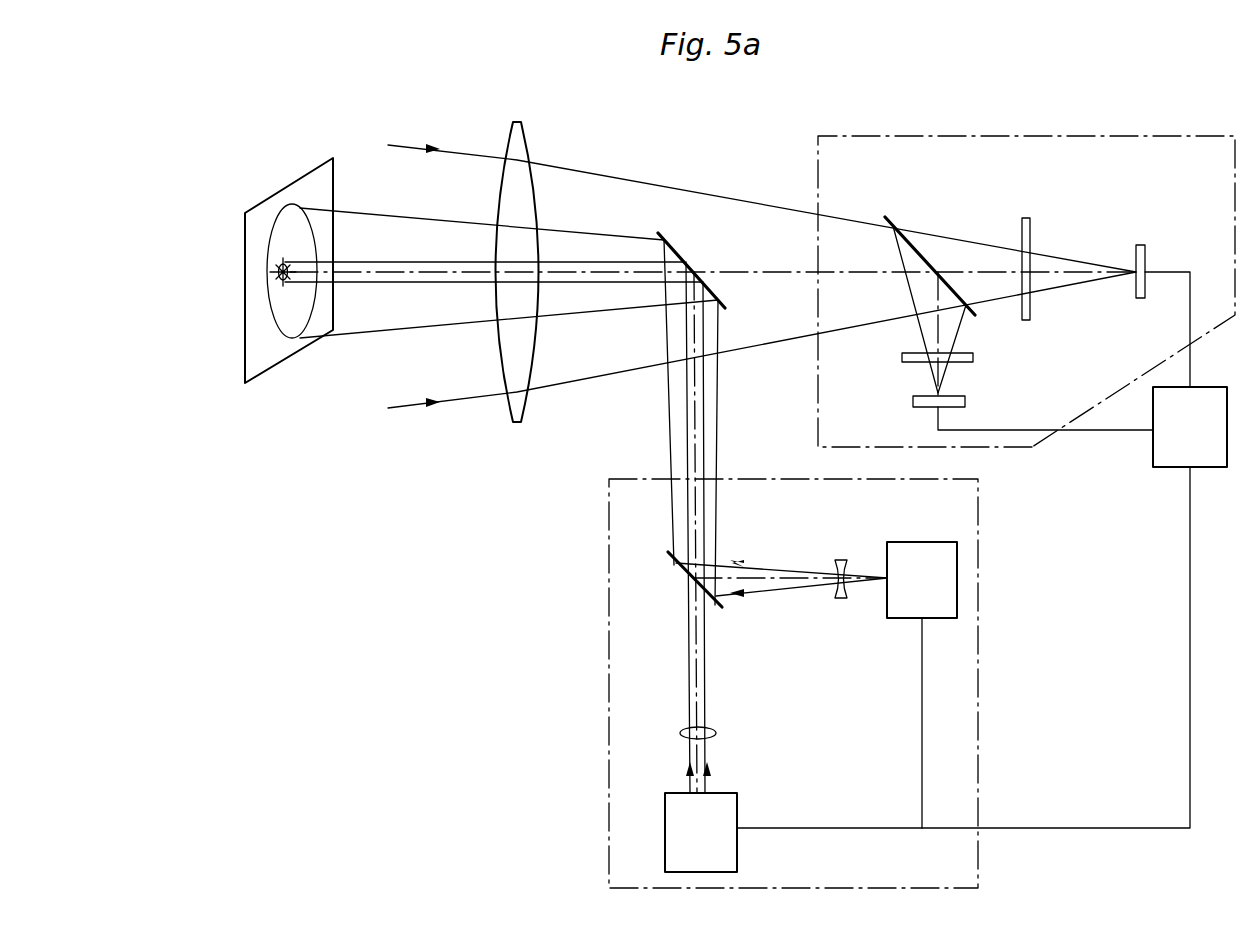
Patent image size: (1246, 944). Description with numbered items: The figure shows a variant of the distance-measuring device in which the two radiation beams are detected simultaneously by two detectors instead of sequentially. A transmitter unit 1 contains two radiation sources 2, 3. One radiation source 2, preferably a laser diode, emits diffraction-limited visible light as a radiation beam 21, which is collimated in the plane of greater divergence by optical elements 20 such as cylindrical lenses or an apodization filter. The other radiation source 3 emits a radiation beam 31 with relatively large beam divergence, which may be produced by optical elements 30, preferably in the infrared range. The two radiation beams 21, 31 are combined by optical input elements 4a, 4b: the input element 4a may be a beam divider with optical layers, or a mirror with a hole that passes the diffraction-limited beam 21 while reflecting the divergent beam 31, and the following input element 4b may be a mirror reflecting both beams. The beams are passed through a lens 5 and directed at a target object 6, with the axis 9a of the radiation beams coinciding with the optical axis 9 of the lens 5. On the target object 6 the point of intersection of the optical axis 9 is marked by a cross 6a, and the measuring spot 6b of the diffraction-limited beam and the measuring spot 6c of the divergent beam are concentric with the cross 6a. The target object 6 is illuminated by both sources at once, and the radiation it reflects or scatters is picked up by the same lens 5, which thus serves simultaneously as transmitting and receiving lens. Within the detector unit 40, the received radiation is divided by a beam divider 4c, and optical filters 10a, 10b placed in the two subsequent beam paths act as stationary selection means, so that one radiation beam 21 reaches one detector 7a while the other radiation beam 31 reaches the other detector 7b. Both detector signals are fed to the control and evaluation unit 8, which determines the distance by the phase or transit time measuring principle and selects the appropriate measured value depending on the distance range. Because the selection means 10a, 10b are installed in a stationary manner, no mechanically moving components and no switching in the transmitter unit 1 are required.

The transmitter unit 1 is at (609, 552).
The radiation source 2 is at (710, 851).
The radiation source 3 is at (930, 597).
The optical input element 4a is at (678, 562).
The optical input element 4b is at (718, 294).
The beam divider 4c is at (918, 250).
The lens 5 is at (511, 150).
The target object 6 is at (301, 181).
The cross 6a is at (280, 263).
The measuring spot 6b is at (278, 273).
The measuring spot 6c is at (278, 330).
The detector 7a is at (1146, 282).
The detector 7b is at (953, 397).
The control and evaluation unit 8 is at (1200, 444).
The optical axis 9 is at (805, 270).
The axis of radiation beam 9a is at (405, 274).
The optical filter 10a is at (1031, 305).
The optical filter 10b is at (913, 362).
The optical elements 20 is at (708, 738).
The radiation beam 21 is at (705, 655).
The optical elements 30 is at (841, 600).
The radiation beam 31 is at (776, 571).
The detector unit 40 is at (1056, 136).